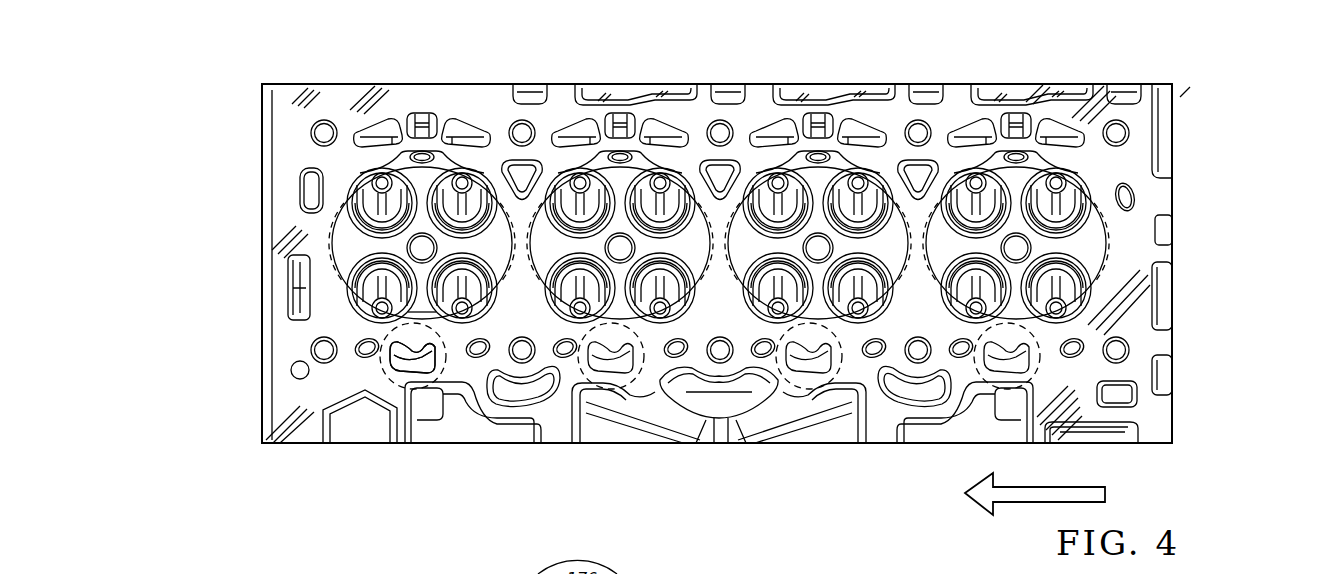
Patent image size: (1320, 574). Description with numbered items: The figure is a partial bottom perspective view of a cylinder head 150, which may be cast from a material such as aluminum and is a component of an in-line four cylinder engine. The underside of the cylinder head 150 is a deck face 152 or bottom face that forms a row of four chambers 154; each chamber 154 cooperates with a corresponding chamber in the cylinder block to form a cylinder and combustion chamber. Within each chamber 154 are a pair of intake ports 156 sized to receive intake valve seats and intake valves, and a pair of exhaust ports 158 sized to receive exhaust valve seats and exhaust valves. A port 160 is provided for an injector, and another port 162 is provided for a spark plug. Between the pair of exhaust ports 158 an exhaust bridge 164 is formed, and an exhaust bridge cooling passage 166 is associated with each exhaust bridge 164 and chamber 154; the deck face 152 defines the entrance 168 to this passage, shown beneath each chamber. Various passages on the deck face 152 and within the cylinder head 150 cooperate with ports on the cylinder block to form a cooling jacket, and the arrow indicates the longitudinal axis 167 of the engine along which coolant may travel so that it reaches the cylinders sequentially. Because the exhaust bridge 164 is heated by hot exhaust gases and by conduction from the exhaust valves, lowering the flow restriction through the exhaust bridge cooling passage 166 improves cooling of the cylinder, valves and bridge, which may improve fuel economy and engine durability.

The cylinder head 150 is at (1187, 144).
The deck face 152 is at (1133, 298).
The chamber 154 is at (353, 249).
The intake port 156 is at (380, 181).
The exhaust port 158 is at (447, 283).
The injector port 160 is at (421, 151).
The spark plug port 162 is at (416, 244).
The exhaust bridge 164 is at (418, 310).
The exhaust bridge cooling passage 166 is at (446, 381).
The longitudinal axis 167 is at (1105, 495).
The entrance 168 is at (401, 368).